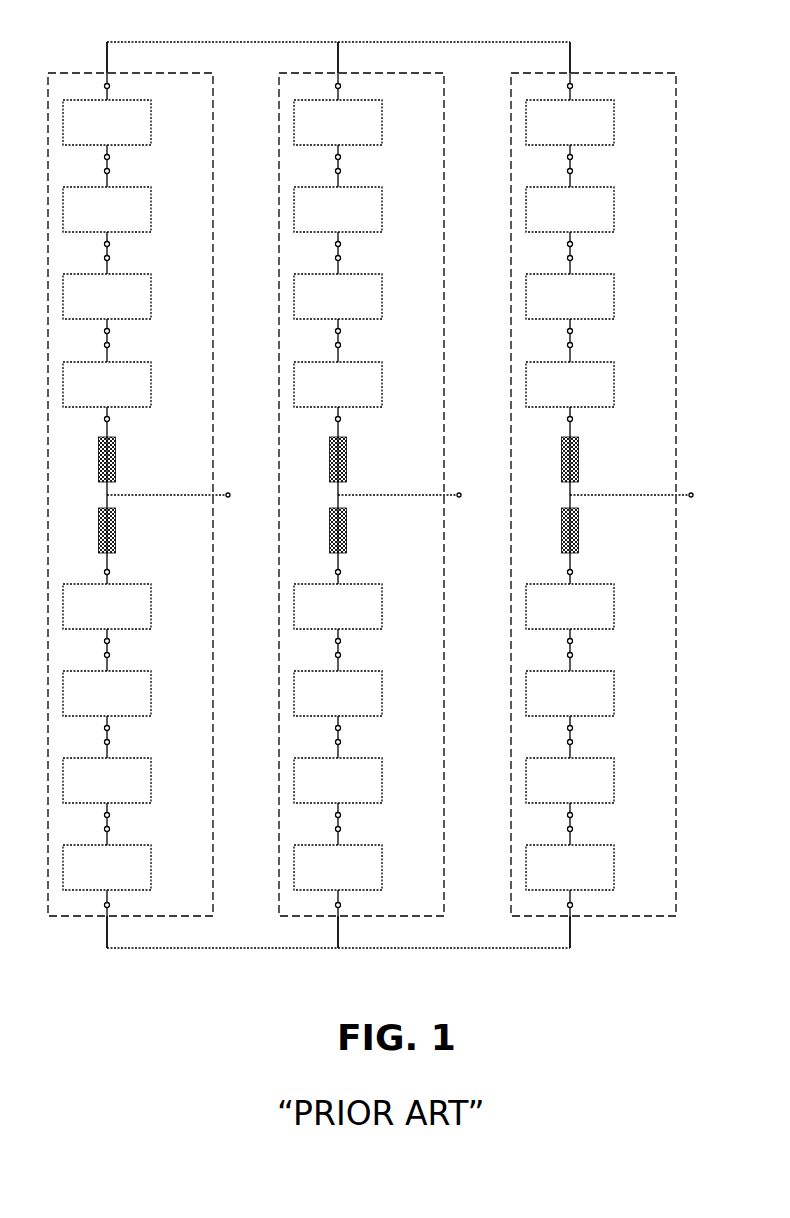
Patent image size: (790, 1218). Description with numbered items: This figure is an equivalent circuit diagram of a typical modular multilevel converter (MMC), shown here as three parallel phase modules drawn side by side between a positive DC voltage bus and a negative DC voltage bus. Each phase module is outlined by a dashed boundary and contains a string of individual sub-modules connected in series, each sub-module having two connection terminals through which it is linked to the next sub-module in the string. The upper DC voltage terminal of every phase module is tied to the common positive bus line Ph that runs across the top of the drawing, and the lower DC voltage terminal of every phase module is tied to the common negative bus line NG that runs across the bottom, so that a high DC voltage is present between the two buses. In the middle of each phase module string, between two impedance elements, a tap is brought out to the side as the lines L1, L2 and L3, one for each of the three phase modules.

The first tap line L1 is at (180, 496).
The second tap line L2 is at (411, 496).
The third tap line L3 is at (643, 496).
The positive bus line Ph is at (216, 41).
The negative bus line NG is at (220, 950).